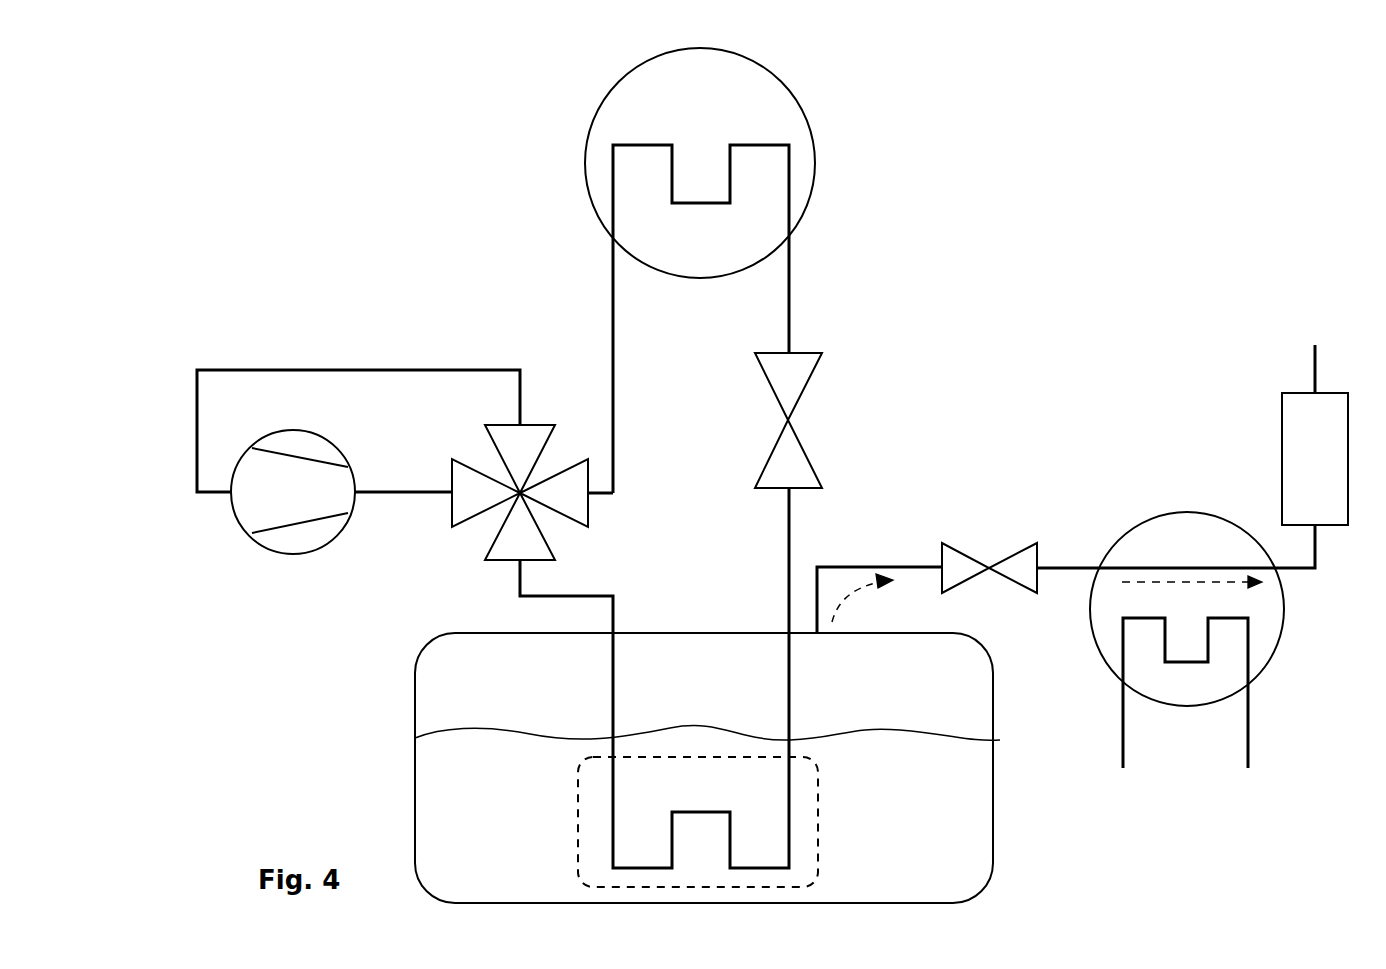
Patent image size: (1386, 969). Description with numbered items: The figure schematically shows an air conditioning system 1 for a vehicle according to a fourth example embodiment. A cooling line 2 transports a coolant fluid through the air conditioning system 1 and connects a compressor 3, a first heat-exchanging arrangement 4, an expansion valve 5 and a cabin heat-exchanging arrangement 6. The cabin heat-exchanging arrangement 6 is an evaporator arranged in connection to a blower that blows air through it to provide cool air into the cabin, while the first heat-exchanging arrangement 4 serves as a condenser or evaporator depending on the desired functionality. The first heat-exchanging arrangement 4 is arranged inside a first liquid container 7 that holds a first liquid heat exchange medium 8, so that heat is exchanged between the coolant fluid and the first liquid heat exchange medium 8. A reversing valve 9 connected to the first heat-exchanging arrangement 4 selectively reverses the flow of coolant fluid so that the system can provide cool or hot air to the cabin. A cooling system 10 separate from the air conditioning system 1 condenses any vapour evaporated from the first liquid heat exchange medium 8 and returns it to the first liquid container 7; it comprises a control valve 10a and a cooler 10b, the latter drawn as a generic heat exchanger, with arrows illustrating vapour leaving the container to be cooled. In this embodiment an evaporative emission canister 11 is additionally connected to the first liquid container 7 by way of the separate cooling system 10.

The air conditioning system 1 is at (357, 203).
The cooling line 2 is at (408, 493).
The compressor 3 is at (290, 431).
The first heat-exchanging arrangement 4 is at (822, 862).
The expansion valve 5 is at (815, 352).
The cabin heat-exchanging arrangement 6 is at (798, 100).
The first liquid container 7 is at (993, 812).
The first liquid heat exchange medium 8 is at (508, 836).
The reversing valve 9 is at (498, 422).
The cooling system 10 is at (1228, 288).
The control valve 10a is at (968, 555).
The cooler 10b is at (1122, 540).
The evaporative emission canister 11 is at (1336, 393).